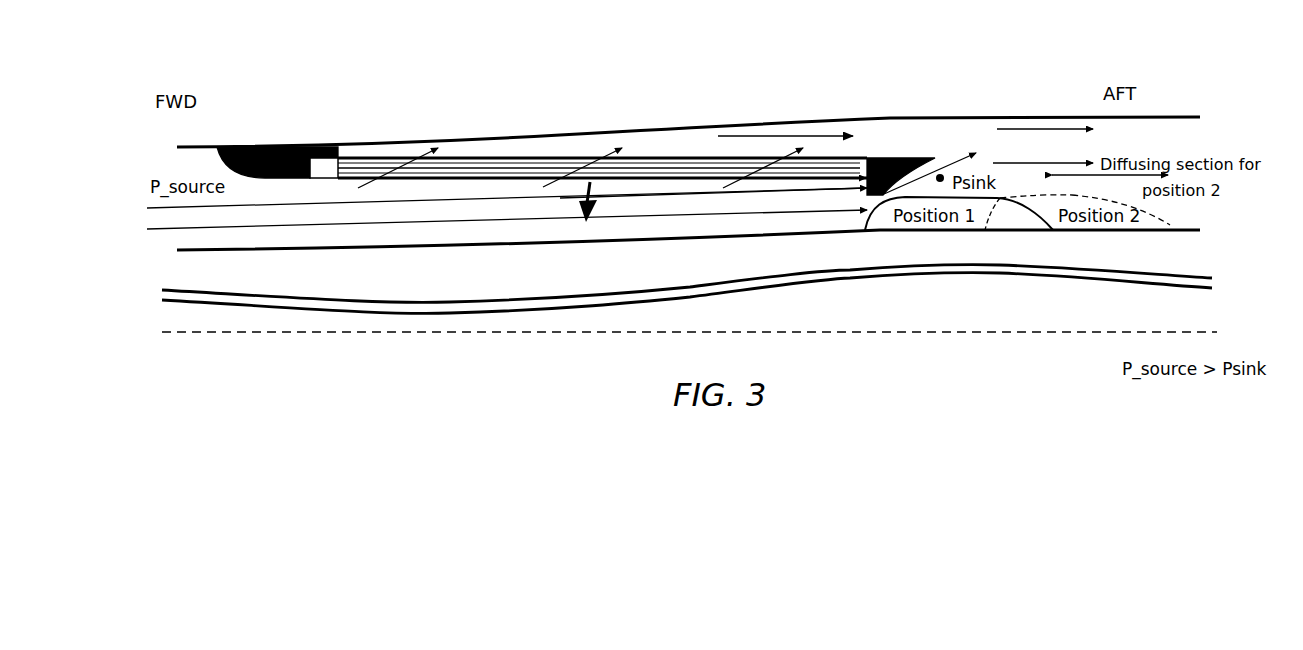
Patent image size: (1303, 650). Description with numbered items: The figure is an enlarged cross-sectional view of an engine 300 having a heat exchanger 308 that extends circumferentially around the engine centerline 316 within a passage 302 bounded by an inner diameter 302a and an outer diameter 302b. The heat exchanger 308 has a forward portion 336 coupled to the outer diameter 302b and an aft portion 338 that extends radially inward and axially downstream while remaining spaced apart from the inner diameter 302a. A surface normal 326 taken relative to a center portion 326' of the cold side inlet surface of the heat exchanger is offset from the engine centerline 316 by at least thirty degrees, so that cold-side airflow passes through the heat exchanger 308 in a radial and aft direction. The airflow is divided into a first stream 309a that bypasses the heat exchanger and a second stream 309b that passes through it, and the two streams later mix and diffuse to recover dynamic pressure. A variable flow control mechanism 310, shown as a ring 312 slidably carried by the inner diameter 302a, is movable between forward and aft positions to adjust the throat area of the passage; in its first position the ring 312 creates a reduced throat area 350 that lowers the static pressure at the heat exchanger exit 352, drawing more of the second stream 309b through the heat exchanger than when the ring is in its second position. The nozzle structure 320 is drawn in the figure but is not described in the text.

The engine 300 is at (128, 112).
The passage 302 is at (188, 250).
The inner diameter of the passage 302a is at (213, 250).
The outer diameter of the passage 302b is at (650, 134).
The heat exchanger 308 is at (464, 152).
The first stream 309a is at (823, 213).
The second stream 309b is at (799, 135).
The variable flow control mechanism 310 is at (1030, 193).
The ring 312 is at (998, 195).
The engine centerline 316 is at (183, 333).
The nozzle body 320 is at (262, 195).
The surface normal 326 is at (647, 234).
The center portion 326' is at (580, 218).
The forward portion 336 is at (320, 163).
The aft portion 338 is at (895, 157).
The reduced throat area 350 is at (872, 188).
The heat exchanger exit 352 is at (930, 140).